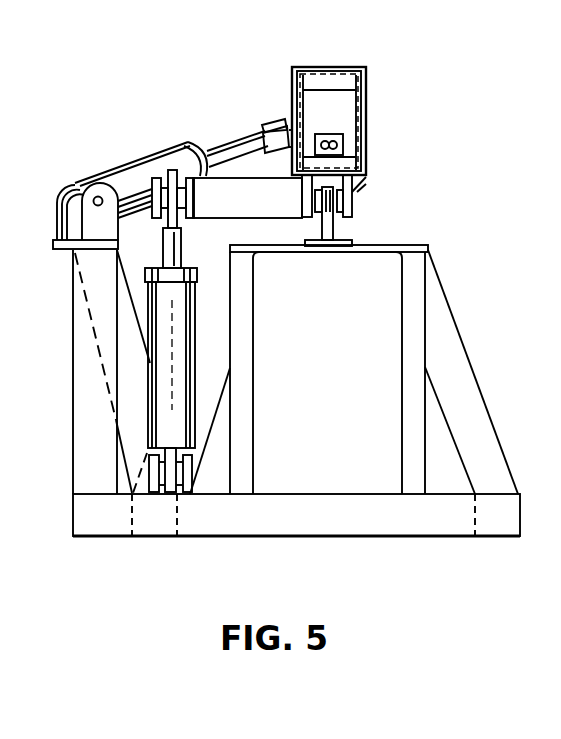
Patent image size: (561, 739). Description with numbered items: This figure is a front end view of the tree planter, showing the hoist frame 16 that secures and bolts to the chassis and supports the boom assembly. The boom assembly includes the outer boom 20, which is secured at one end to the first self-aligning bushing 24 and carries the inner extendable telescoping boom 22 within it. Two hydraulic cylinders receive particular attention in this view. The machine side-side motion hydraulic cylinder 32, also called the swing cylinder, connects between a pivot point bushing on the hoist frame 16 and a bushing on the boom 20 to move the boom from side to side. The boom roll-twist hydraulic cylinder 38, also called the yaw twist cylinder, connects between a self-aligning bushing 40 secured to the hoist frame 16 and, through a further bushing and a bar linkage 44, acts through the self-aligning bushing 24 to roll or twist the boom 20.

The hoist frame 16 is at (97, 537).
The outer boom 20 is at (368, 93).
The inner extendable telescoping boom 22 is at (306, 108).
The first self-aligning bushing 24 is at (326, 202).
The machine side-side motion hydraulic cylinder 32 is at (162, 151).
The boom roll-twist hydraulic cylinder 38 is at (197, 299).
The self-aligning bushing 40 is at (163, 475).
The bar linkage 44 is at (235, 220).